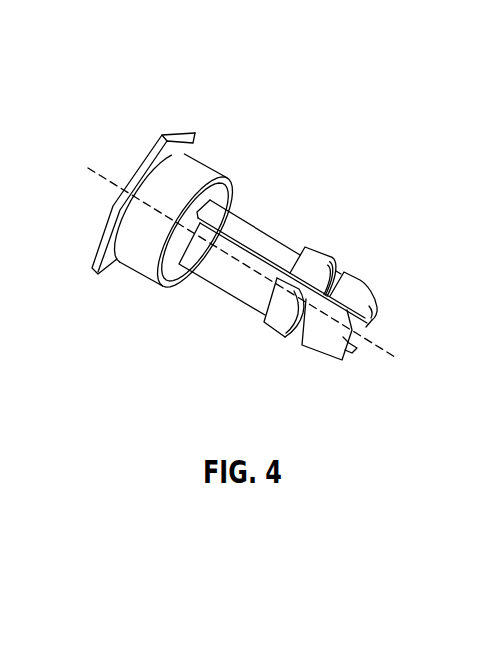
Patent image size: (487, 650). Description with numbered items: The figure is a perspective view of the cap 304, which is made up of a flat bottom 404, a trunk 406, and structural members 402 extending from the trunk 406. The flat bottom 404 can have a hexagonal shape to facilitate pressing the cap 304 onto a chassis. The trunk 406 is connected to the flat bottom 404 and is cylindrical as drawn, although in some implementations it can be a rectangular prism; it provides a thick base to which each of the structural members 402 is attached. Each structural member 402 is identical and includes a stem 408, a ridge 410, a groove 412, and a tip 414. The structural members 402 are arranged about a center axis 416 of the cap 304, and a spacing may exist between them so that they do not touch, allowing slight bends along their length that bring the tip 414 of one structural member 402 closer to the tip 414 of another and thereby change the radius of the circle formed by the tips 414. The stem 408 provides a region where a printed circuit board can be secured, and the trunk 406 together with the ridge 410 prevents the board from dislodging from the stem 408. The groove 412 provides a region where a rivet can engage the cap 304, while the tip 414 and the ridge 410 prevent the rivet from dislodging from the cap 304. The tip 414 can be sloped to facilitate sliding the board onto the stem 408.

The cap 304 is at (140, 73).
The structural member 402 is at (382, 323).
The flat bottom 404 is at (172, 140).
The trunk 406 is at (216, 160).
The stem 408 is at (250, 230).
The ridge 410 is at (312, 247).
The groove 412 is at (333, 270).
The tip 414 is at (360, 289).
The center axis 416 is at (95, 180).